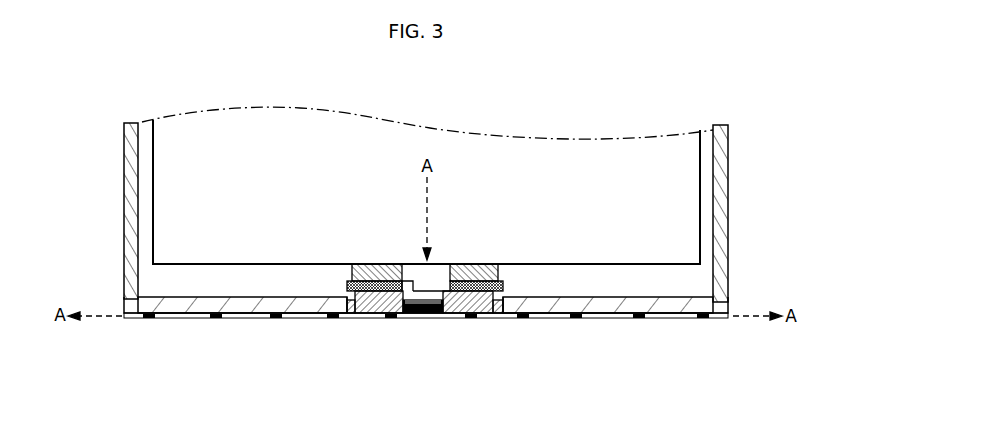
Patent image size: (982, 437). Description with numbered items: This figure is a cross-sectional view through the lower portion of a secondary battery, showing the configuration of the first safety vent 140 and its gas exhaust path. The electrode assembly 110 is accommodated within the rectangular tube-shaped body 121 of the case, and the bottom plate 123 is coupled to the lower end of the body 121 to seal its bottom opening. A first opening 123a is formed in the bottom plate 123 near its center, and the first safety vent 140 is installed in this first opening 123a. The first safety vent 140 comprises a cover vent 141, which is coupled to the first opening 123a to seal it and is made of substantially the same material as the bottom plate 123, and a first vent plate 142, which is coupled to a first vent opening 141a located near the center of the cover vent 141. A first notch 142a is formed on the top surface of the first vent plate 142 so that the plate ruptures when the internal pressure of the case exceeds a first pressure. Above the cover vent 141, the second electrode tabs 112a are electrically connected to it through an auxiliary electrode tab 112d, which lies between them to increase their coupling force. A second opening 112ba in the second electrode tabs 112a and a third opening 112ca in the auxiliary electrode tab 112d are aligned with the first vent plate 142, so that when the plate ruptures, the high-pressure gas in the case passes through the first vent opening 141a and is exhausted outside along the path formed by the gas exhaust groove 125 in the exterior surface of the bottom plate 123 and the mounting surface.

The electrode assembly 110 is at (712, 172).
The body 121 is at (720, 229).
The bottom plate 123 is at (675, 308).
The first opening 123a is at (358, 316).
The gas exhaust groove 125 is at (188, 318).
The second electrode tabs 112a is at (487, 266).
The auxiliary electrode tab 112d is at (503, 287).
The second opening 112ba is at (430, 276).
The third opening 112ca is at (412, 285).
The first safety vent 140 is at (434, 356).
The cover vent 141 is at (500, 308).
The first vent opening 141a is at (405, 318).
The first vent plate 142 is at (453, 318).
The first notch 142a is at (424, 340).